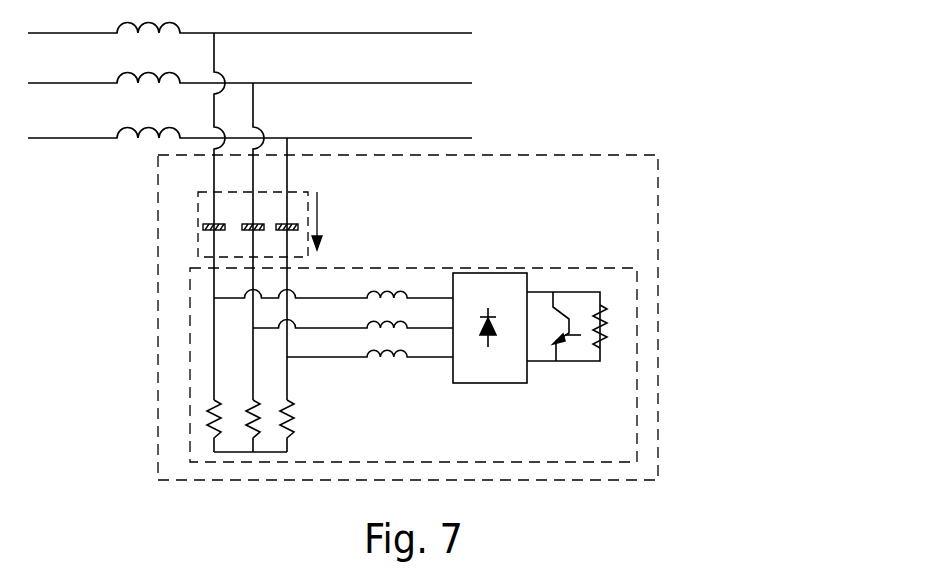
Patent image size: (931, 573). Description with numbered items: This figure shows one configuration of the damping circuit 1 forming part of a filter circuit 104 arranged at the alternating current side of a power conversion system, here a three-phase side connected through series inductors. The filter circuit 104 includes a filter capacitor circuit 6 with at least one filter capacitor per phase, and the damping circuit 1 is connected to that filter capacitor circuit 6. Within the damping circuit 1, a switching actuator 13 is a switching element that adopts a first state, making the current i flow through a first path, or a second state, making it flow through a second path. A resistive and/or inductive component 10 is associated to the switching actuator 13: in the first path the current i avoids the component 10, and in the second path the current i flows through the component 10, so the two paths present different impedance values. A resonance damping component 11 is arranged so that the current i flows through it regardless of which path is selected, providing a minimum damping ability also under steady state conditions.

The damping circuit 1 is at (637, 382).
The filter capacitor circuit 6 is at (202, 237).
The resistive and/or inductive component 10 is at (607, 323).
The resonance damping component 11 is at (293, 418).
The switching actuator 13 is at (567, 307).
The filter circuit 104 is at (658, 455).